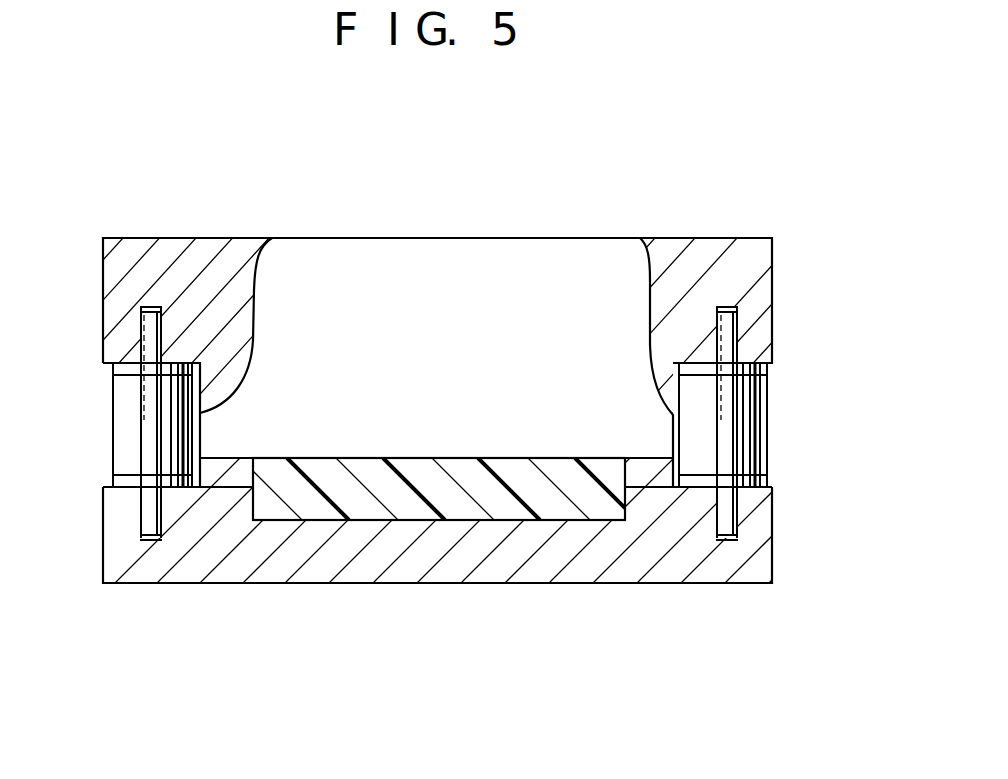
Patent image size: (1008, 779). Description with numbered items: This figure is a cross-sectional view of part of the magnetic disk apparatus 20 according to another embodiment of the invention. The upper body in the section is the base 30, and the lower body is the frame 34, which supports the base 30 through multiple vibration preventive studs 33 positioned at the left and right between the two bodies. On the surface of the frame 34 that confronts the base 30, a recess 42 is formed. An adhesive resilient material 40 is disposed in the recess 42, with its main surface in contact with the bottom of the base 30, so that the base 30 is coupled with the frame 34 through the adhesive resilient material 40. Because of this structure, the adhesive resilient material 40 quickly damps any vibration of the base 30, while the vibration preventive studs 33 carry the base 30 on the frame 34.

The magnetic disk apparatus 20 is at (816, 171).
The base 30 is at (555, 250).
The vibration preventive studs 33 is at (118, 422).
The frame 34 is at (756, 540).
The adhesive resilient material 40 is at (513, 508).
The recess 42 is at (316, 522).